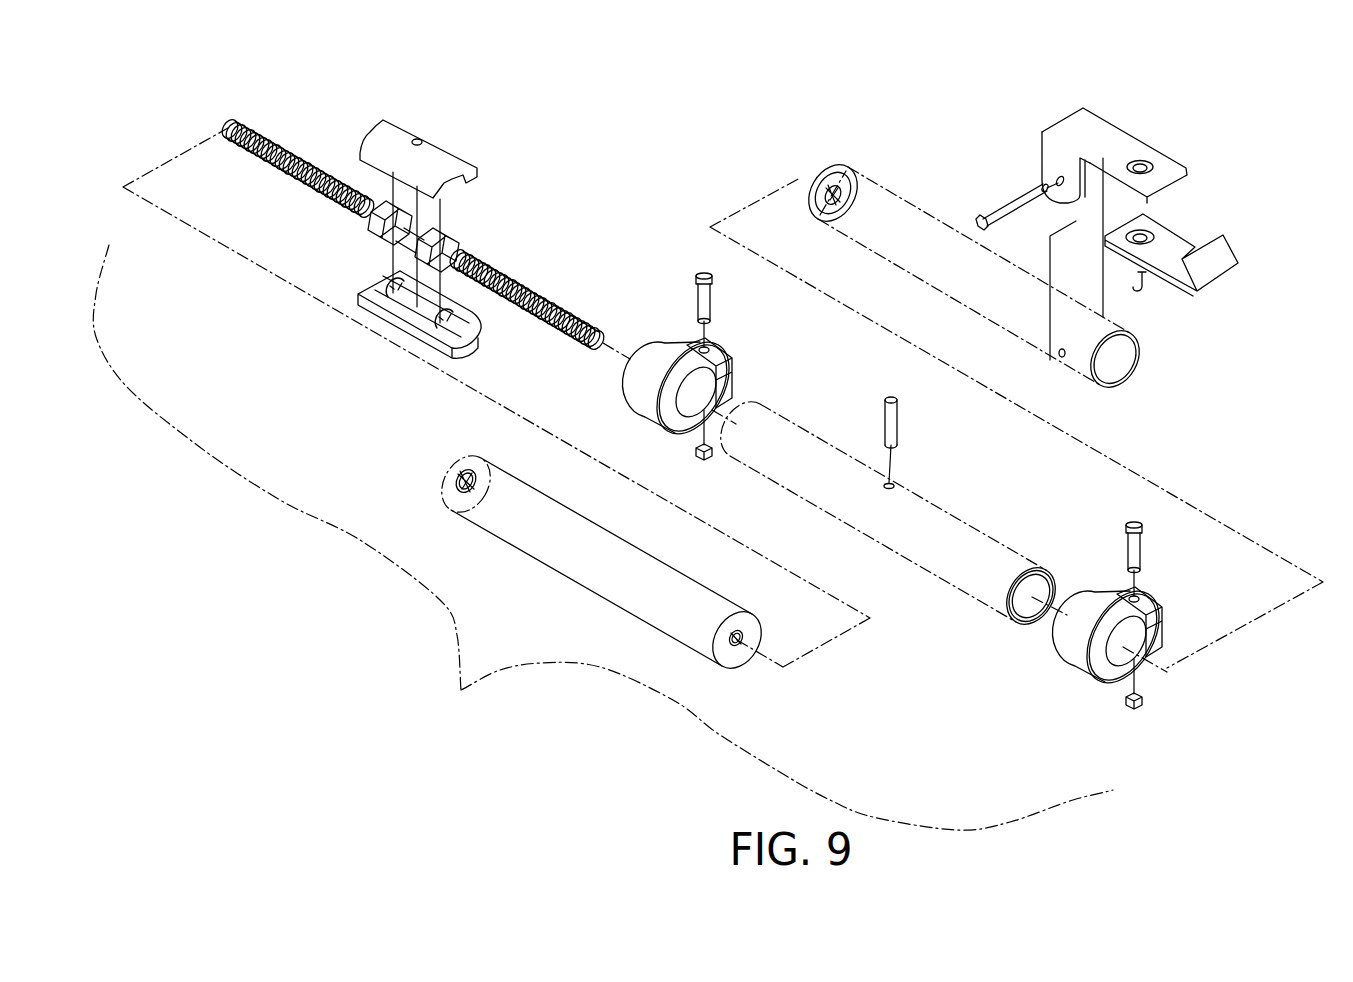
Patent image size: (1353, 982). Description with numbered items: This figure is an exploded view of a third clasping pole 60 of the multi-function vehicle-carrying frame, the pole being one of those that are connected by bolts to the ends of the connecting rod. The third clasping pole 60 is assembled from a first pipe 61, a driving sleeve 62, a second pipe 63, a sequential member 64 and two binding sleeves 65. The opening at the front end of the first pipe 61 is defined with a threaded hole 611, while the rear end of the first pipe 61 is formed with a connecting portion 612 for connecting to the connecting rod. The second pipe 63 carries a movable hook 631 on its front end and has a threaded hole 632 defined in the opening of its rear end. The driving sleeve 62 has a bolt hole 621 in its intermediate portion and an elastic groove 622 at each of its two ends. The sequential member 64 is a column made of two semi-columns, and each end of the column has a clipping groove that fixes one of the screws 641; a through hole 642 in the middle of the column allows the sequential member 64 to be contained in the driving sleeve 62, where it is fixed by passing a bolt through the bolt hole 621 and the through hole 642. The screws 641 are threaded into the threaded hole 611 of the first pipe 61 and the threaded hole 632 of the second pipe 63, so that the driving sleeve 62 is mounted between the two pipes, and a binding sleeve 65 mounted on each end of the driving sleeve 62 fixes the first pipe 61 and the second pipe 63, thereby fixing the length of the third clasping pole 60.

The third clasping pole 60 is at (708, 479).
The first pipe 61 is at (578, 588).
The threaded hole 611 is at (745, 652).
The connecting portion 612 is at (443, 476).
The driving sleeve 62 is at (910, 533).
The bolt hole 621 is at (900, 481).
The elastic groove 622 is at (1050, 585).
The second pipe 63 is at (984, 232).
The movable hook 631 is at (1103, 138).
The threaded hole 632 is at (823, 182).
The sequential member 64 is at (444, 214).
The screw 641 is at (306, 168).
The through hole 642 is at (417, 138).
The binding sleeve 65 is at (650, 403).